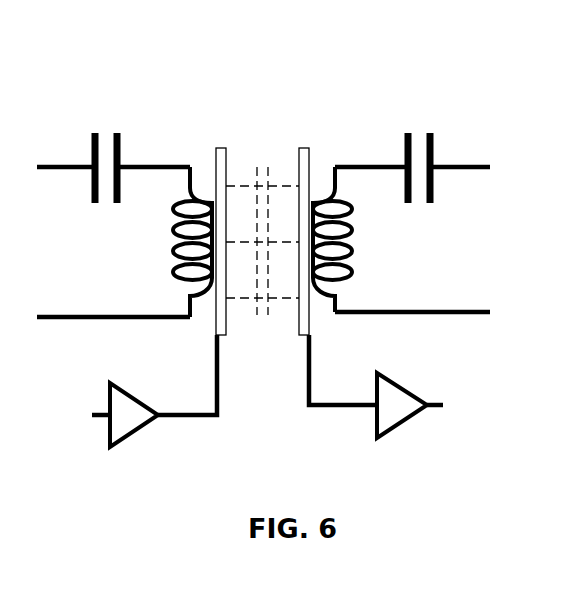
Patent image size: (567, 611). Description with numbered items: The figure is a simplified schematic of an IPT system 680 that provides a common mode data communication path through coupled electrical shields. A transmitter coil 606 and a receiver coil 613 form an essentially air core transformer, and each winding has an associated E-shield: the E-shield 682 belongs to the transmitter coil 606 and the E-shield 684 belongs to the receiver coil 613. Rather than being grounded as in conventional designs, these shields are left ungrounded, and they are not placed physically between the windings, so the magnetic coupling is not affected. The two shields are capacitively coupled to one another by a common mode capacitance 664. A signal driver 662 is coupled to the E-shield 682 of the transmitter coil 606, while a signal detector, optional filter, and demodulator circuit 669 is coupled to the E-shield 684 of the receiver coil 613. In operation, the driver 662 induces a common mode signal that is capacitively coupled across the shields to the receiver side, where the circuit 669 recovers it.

The IPT system 680 is at (288, 75).
The transmitter coil 606 is at (170, 250).
The receiver coil 613 is at (353, 252).
The common mode capacitance 664 is at (262, 157).
The E-shield 684 is at (309, 148).
The E-shield 682 is at (207, 325).
The signal driver 662 is at (120, 448).
The signal detector, filter, and demodulator circuit 669 is at (403, 428).